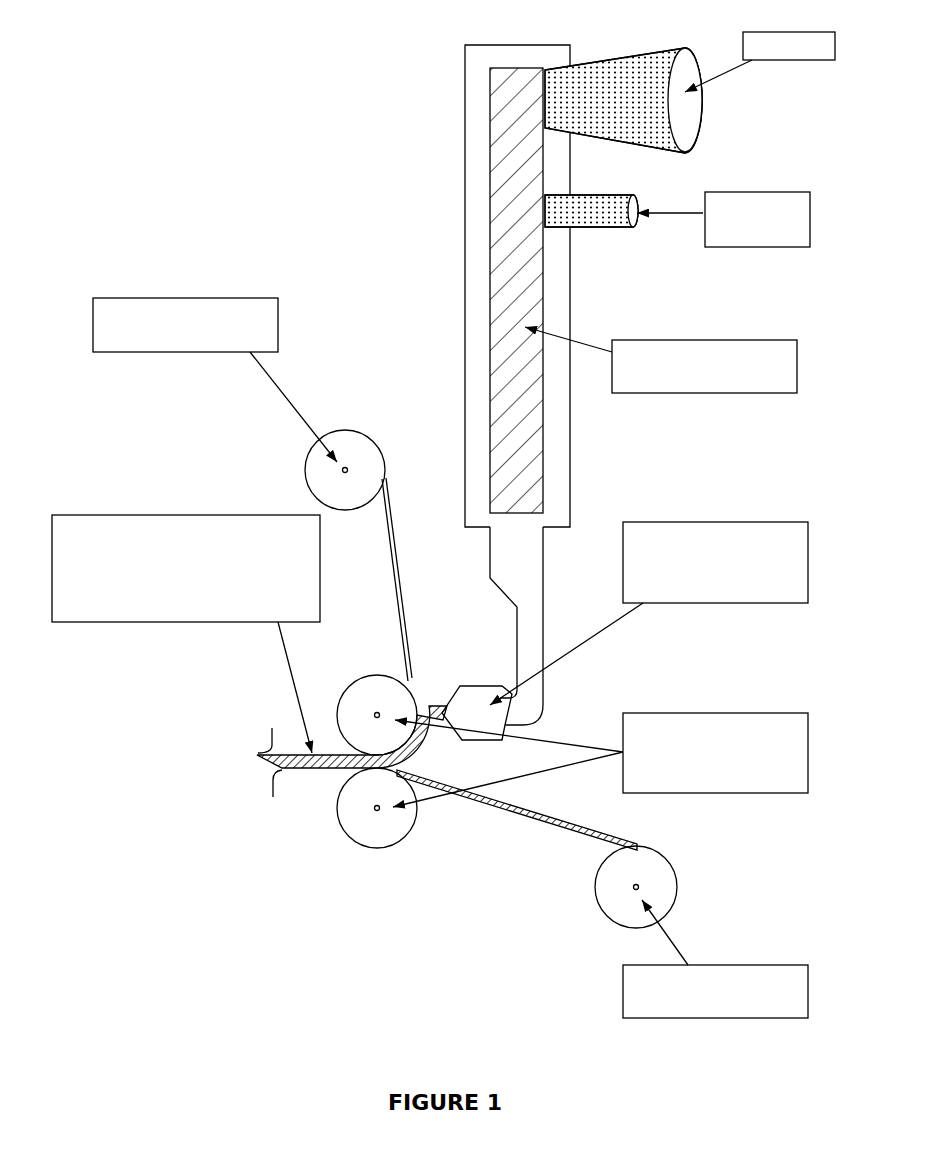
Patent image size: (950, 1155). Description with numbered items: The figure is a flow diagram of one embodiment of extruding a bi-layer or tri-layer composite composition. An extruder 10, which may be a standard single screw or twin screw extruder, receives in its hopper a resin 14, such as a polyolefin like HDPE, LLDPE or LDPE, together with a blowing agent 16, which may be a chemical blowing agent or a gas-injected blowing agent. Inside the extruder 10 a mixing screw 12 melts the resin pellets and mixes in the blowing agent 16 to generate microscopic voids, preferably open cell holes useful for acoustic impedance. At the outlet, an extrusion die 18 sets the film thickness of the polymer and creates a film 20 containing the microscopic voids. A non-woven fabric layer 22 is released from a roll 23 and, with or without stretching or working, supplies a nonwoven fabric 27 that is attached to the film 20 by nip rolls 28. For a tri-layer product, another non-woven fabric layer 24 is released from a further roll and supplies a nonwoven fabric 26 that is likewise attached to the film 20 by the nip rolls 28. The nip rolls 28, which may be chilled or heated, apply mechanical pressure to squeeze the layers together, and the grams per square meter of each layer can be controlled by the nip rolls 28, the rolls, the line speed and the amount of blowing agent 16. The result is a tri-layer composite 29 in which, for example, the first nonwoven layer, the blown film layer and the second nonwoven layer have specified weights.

The extruder 10 is at (465, 125).
The mixing screw 12 is at (782, 340).
The resin 14 is at (818, 32).
The blowing agent 16 is at (798, 192).
The extrusion die 18 is at (785, 522).
The film 20 is at (432, 684).
The fabric layer 22 is at (115, 298).
The roll 23 is at (362, 431).
The fabric layer 24 is at (790, 965).
The nonwoven fabric 26 is at (515, 815).
The nonwoven fabric 27 is at (402, 595).
The nip rolls 28 is at (785, 713).
The tri-layer composite 29 is at (88, 515).